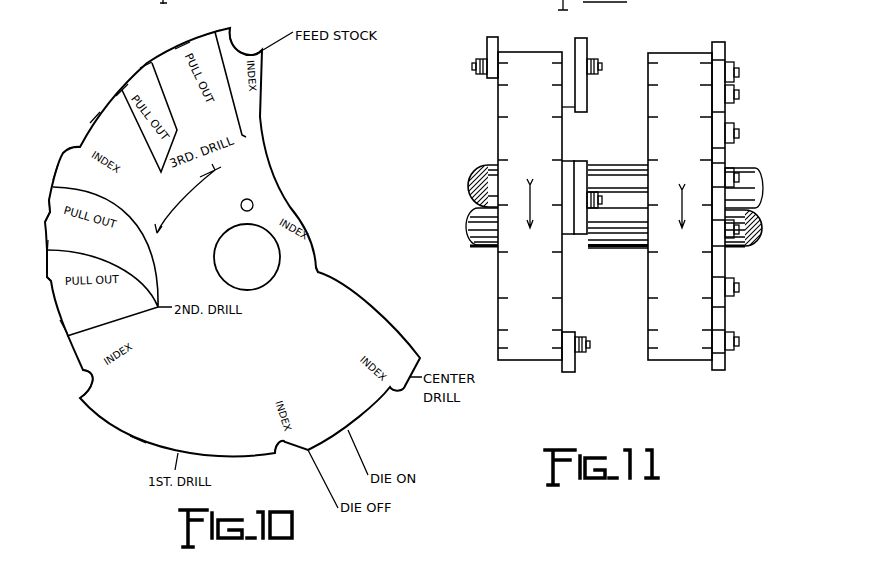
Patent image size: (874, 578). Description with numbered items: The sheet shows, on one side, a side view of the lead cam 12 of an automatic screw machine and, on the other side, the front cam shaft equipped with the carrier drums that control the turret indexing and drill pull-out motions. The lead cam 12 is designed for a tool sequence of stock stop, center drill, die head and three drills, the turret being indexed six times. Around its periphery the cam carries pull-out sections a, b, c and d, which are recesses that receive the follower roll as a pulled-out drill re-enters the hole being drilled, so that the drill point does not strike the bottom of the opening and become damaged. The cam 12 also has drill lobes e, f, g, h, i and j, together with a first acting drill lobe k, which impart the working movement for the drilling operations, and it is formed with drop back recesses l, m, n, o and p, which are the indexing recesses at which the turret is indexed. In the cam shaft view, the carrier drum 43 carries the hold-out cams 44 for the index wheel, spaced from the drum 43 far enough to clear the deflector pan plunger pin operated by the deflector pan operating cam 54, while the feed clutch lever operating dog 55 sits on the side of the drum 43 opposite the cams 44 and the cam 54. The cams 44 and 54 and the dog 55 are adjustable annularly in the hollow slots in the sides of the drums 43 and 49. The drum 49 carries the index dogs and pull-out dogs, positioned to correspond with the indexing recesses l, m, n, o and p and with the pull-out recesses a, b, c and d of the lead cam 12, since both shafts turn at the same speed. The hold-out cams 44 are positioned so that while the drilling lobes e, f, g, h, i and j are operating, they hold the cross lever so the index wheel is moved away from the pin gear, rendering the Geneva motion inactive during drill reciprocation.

In FIG. 10, the lead cam 12 is at (252, 160).
In FIG. 11, the carrier drum 43 is at (522, 358).
In FIG. 11, the hold-out cams 44 is at (588, 42).
In FIG. 11, the carrier drum 49 is at (680, 360).
In FIG. 11, the deflector pan operating cam 54 is at (568, 333).
In FIG. 11, the feed clutch lever operating dog 55 is at (487, 43).
In FIG. 10, the pull-out section a is at (183, 45).
In FIG. 10, the pull-out section b is at (122, 90).
In FIG. 10, the pull-out section c is at (47, 210).
In FIG. 10, the pull-out section d is at (50, 285).
In FIG. 10, the drill lobe e is at (211, 31).
In FIG. 10, the drill lobe f is at (146, 62).
In FIG. 10, the drill lobe g is at (95, 117).
In FIG. 10, the drill lobe h is at (55, 173).
In FIG. 10, the drill lobe i is at (47, 248).
In FIG. 10, the drill lobe j is at (63, 328).
In FIG. 10, the first acting drill lobe k is at (138, 440).
In FIG. 10, the drop back recess l is at (77, 148).
In FIG. 10, the drop back recess m is at (90, 375).
In FIG. 10, the drop back recess n is at (242, 42).
In FIG. 10, the drop back recess o is at (390, 388).
In FIG. 10, the drop back recess p is at (318, 265).